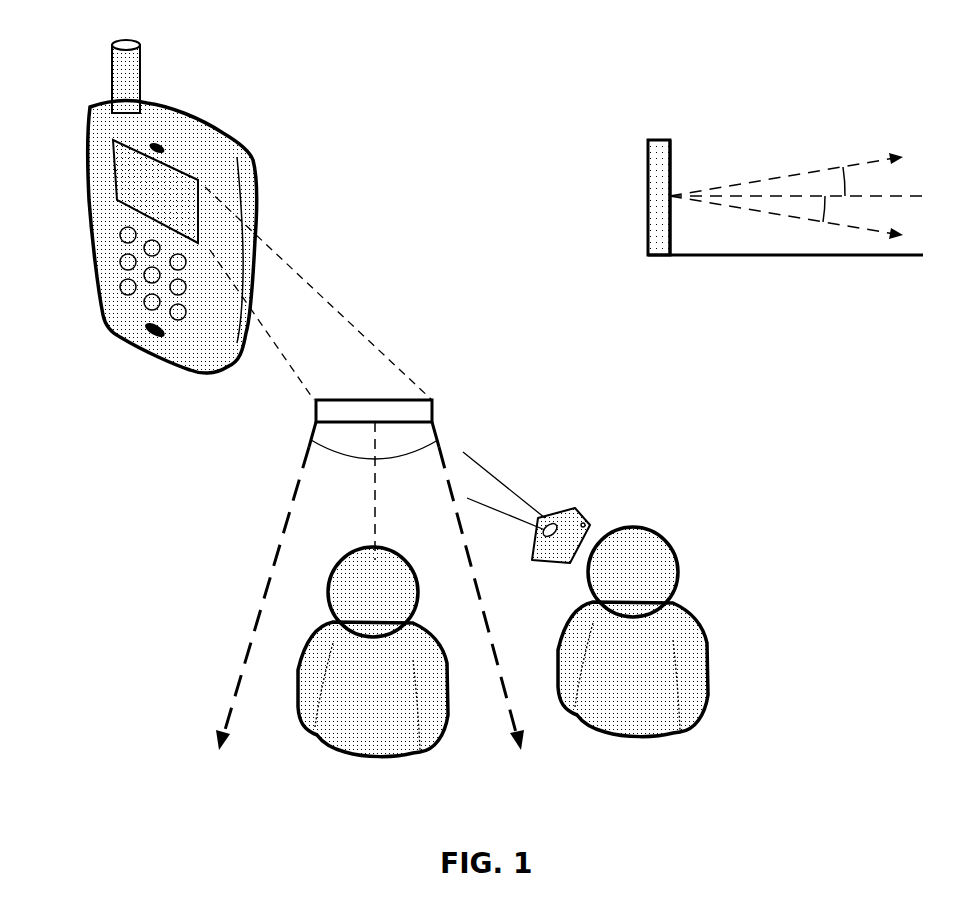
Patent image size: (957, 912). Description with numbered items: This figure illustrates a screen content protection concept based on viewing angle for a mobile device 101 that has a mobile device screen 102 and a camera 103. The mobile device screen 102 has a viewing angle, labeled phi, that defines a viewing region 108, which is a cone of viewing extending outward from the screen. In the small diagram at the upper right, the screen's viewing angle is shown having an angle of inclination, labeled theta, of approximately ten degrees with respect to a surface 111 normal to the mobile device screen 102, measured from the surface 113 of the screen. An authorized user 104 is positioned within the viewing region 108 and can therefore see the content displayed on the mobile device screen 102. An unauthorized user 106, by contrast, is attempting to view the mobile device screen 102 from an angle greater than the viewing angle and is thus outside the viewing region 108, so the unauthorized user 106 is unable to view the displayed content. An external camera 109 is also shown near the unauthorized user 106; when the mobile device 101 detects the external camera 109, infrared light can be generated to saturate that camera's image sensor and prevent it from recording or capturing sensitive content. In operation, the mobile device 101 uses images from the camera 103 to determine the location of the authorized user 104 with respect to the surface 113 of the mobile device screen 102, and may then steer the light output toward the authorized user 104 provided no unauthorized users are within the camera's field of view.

The mobile device 101 is at (240, 140).
The mobile device screen 102 is at (415, 412).
The camera 103 is at (162, 138).
The authorized user 104 is at (395, 550).
The unauthorized user 106 is at (655, 530).
The viewing region 108 is at (278, 508).
The external camera 109 is at (572, 508).
The surface normal to the mobile device screen 111 is at (755, 257).
The surface of the mobile device screen 113 is at (670, 152).